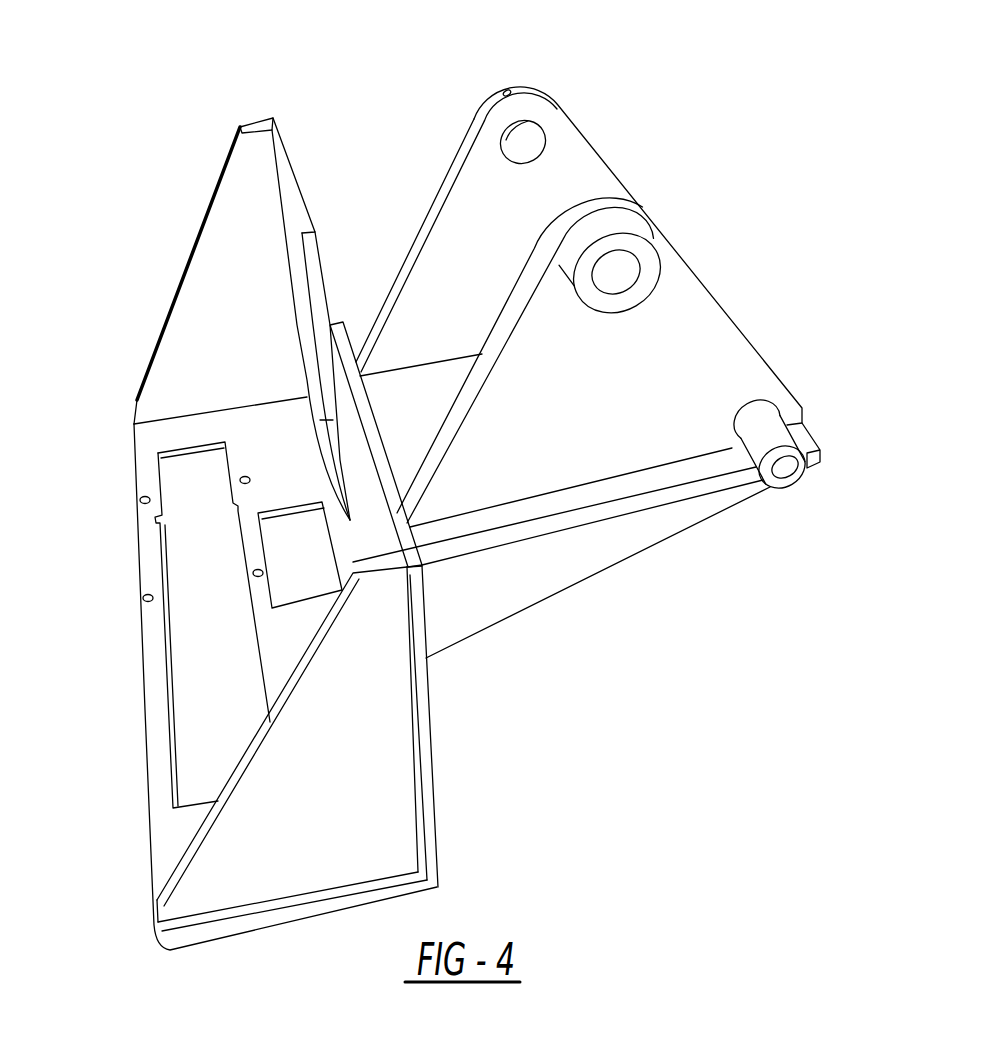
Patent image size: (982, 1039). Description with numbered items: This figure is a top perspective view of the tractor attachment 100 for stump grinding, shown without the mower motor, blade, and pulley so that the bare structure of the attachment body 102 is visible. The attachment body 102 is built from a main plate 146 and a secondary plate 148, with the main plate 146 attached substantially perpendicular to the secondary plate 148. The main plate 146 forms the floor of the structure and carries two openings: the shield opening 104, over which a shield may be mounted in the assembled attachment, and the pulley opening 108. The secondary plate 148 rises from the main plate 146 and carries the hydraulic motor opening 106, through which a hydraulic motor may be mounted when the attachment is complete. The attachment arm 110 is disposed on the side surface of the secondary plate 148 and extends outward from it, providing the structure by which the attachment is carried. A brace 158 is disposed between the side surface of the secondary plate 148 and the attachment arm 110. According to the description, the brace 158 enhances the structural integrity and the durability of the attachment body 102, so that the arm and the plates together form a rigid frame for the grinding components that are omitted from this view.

The tractor attachment 100 is at (114, 178).
The attachment body 102 is at (267, 117).
The shield opening 104 is at (200, 550).
The hydraulic motor opening 106 is at (332, 288).
The pulley opening 108 is at (297, 560).
The attachment arm 110 is at (728, 317).
The main plate 146 is at (121, 454).
The secondary plate 148 is at (288, 153).
The brace 158 is at (620, 563).